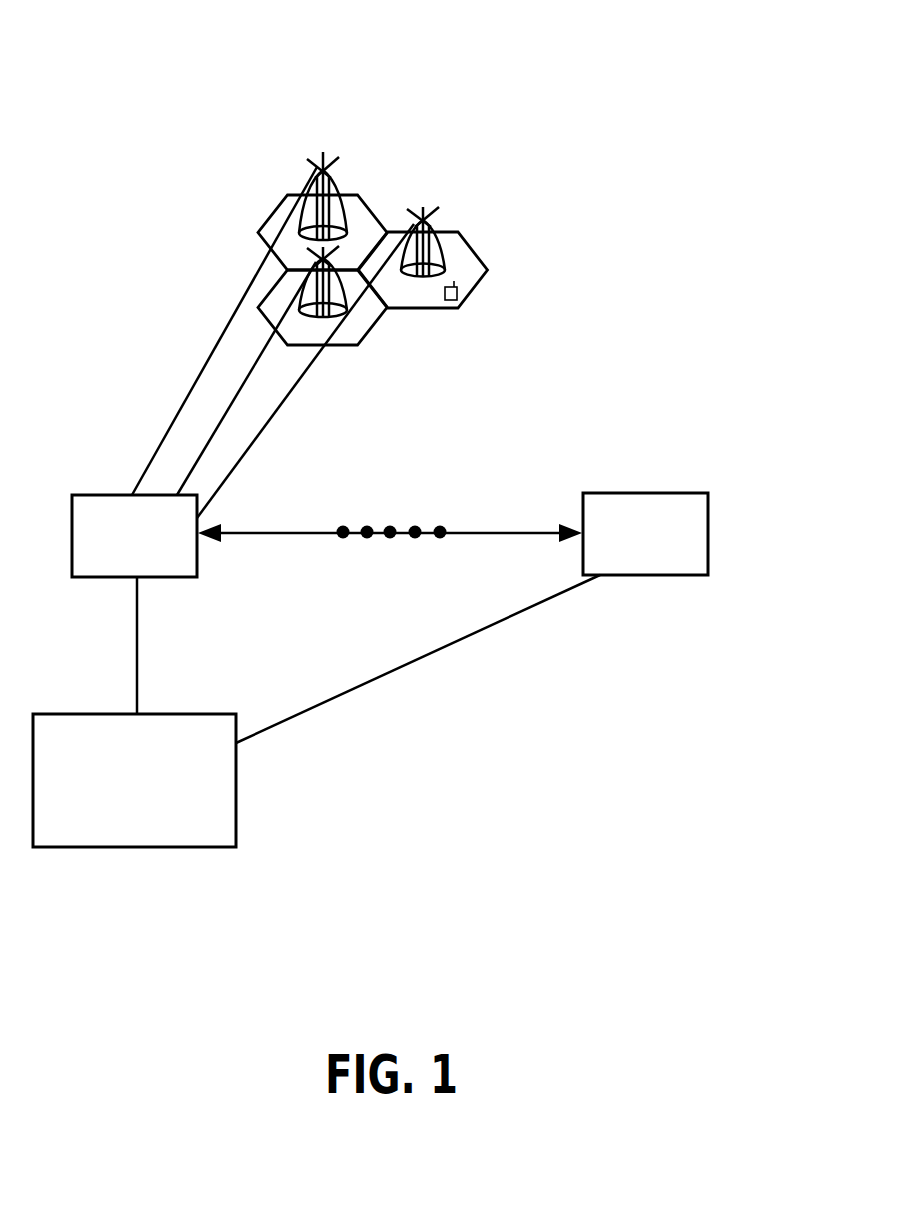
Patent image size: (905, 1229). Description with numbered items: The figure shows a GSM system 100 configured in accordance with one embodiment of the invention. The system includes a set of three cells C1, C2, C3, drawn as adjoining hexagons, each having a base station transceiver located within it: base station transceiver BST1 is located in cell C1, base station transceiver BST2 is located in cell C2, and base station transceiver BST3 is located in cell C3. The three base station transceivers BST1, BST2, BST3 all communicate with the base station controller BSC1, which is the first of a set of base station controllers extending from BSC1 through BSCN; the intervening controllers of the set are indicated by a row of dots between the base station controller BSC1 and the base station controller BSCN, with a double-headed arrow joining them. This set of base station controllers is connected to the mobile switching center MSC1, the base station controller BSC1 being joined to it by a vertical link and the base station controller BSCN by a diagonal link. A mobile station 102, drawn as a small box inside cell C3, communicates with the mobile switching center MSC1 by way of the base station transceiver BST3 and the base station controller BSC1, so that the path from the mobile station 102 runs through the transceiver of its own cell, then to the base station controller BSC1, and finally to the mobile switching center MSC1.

The GSM system 100 is at (732, 94).
The mobile station 102 is at (452, 309).
The base station transceiver BST1 is at (335, 174).
The base station transceiver BST2 is at (300, 315).
The base station transceiver BST3 is at (433, 220).
The cell C1 is at (267, 220).
The cell C2 is at (268, 295).
The cell C3 is at (472, 247).
The base station controller BSC1 is at (134, 536).
The base station controller BSCN is at (645, 534).
The mobile switching center MSC1 is at (134, 780).